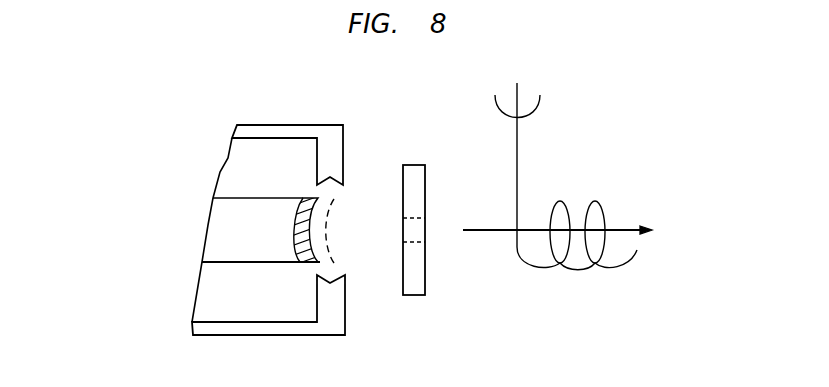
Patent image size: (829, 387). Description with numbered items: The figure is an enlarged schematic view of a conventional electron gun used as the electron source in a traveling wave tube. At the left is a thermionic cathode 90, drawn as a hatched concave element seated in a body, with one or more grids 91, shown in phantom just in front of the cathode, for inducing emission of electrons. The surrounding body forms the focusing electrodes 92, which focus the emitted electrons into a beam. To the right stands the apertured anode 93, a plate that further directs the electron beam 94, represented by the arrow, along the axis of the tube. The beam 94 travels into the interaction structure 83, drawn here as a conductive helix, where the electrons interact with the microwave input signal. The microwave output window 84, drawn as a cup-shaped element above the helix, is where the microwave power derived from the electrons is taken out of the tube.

The interaction structure 83 is at (619, 151).
The microwave output window 84 is at (527, 89).
The thermionic cathode 90 is at (294, 263).
The grid 91 is at (337, 249).
The focusing electrodes 92 is at (343, 138).
The apertured anode 93 is at (425, 180).
The electron beam 94 is at (494, 233).